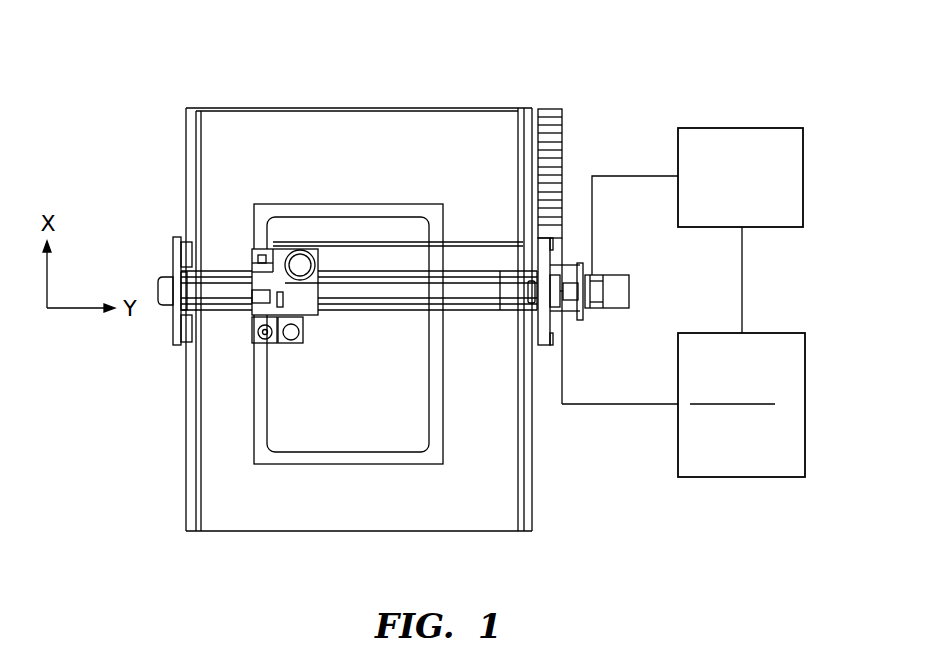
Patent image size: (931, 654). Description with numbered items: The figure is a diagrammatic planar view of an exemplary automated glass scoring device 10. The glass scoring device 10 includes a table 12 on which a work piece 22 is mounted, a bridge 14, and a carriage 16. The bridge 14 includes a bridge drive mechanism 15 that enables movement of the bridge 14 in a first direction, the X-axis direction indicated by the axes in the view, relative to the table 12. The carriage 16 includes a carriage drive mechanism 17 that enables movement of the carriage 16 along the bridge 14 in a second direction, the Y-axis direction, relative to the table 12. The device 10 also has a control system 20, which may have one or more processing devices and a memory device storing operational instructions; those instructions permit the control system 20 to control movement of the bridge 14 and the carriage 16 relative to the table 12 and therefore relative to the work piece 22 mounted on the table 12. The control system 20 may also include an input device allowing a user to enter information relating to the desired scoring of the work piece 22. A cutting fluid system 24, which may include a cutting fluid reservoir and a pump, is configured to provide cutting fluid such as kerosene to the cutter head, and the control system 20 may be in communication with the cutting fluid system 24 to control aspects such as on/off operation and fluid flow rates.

The automated glass scoring device 10 is at (680, 43).
The table 12 is at (233, 523).
The bridge 14 is at (232, 312).
The bridge drive mechanism 15 is at (629, 290).
The carriage 16 is at (254, 240).
The carriage drive mechanism 17 is at (320, 252).
The control system 20 is at (805, 367).
The work piece 22 is at (397, 446).
The cutting fluid system 24 is at (805, 160).